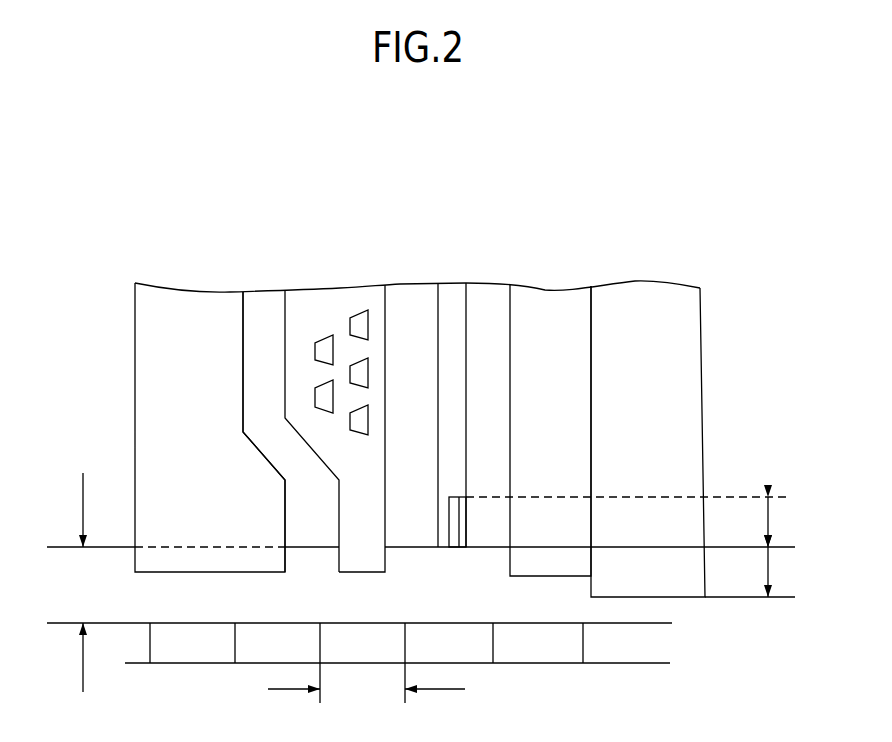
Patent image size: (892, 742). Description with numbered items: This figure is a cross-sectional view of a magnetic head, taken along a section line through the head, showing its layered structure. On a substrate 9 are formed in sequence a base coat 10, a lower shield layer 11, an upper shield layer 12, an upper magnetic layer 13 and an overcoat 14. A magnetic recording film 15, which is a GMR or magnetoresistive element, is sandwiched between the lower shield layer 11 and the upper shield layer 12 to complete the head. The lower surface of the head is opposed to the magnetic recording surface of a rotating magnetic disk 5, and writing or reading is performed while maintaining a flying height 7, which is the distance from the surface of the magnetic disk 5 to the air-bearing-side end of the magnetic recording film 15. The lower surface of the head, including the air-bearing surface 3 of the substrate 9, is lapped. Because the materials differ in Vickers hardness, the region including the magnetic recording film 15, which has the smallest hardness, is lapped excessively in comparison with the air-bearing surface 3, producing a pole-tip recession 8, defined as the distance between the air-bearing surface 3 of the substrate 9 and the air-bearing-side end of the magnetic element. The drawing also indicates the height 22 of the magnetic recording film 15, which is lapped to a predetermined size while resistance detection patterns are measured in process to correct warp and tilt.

The overcoat 14 is at (145, 334).
The upper magnetic layer 13 is at (262, 308).
The upper shield layer 12 is at (413, 308).
The lower shield layer 11 is at (484, 305).
The base coat 10 is at (560, 305).
The substrate 9 is at (681, 330).
The height of the magnetoresistive film 22 is at (770, 520).
The pole-tip recession 8 is at (770, 573).
The air-bearing surface 3 is at (650, 598).
The magnetic disk 5 is at (628, 667).
The magnetic recording film 15 is at (453, 548).
The flying height 7 is at (83, 588).